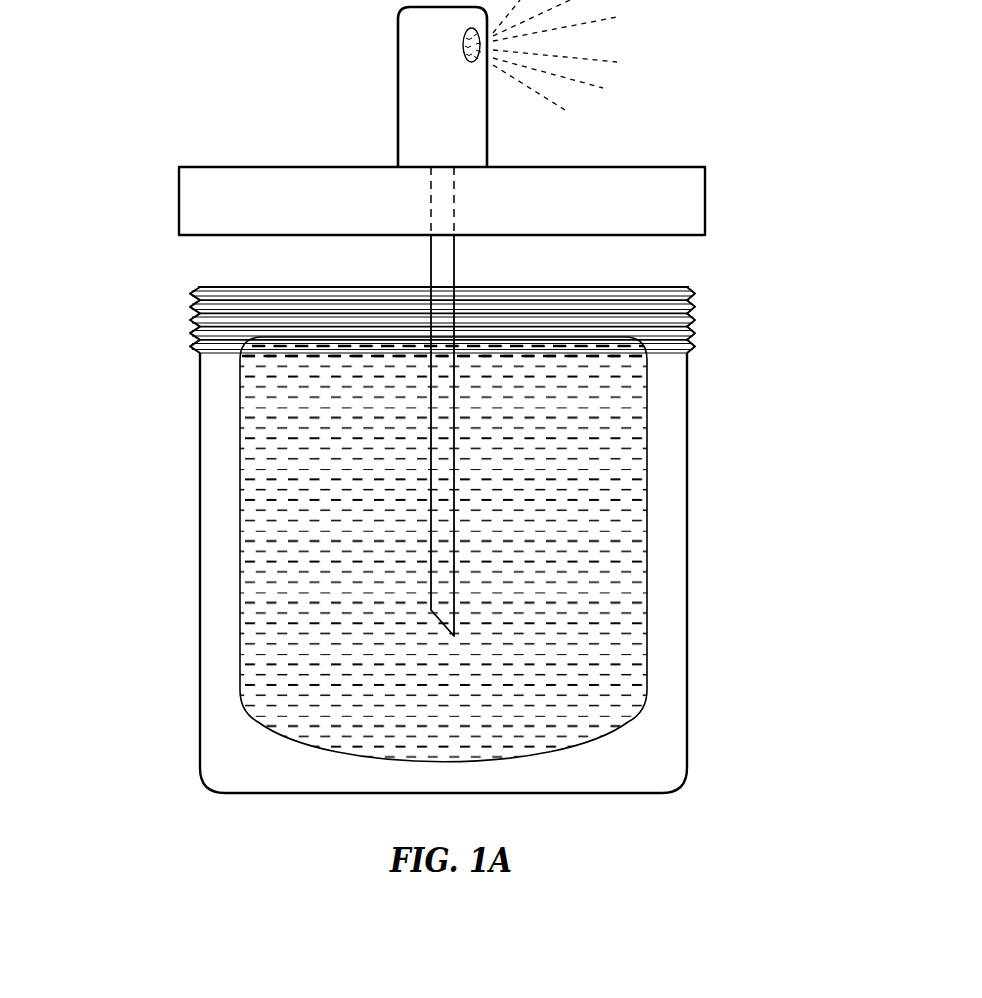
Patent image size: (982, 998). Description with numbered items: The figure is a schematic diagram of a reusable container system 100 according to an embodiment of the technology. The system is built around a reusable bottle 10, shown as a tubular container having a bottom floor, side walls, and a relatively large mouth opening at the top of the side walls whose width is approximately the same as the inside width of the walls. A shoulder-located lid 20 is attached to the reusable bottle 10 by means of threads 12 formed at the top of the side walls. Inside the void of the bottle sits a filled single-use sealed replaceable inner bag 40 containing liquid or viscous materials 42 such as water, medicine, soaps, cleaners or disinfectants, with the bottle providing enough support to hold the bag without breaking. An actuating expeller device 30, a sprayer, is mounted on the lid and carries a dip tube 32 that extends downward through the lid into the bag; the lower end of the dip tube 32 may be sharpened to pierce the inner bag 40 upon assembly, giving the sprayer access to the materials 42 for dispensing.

The reusable container system 100 is at (103, 92).
The actuating expeller device 30 is at (398, 91).
The shoulder-located lid 20 is at (200, 205).
The dip tube 32 is at (455, 262).
The reusable bottle 10 is at (200, 518).
The threads 12 is at (697, 318).
The single-use sealed replaceable inner bag 40 is at (240, 687).
The liquid or viscous materials 42 is at (608, 592).